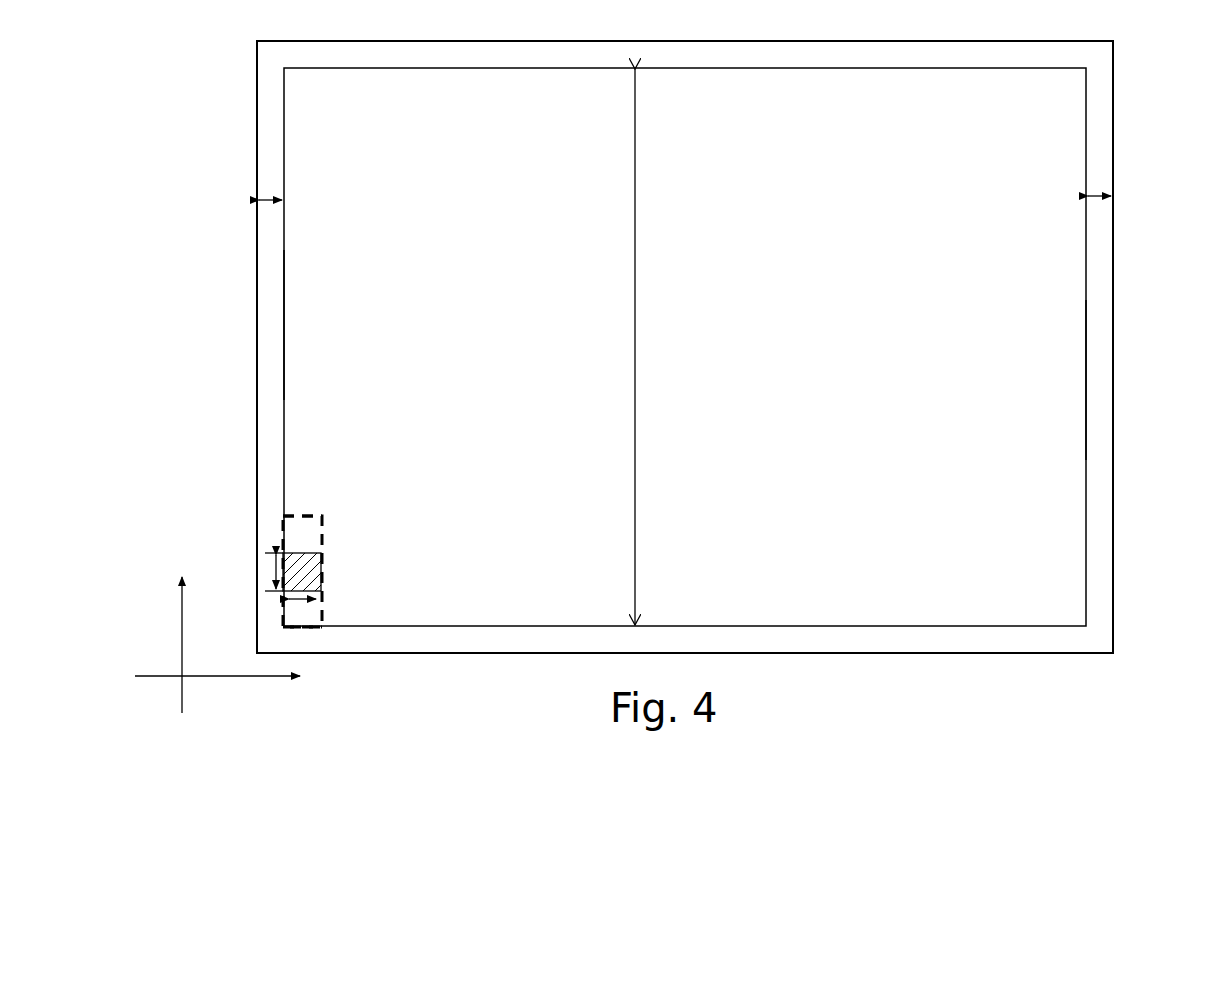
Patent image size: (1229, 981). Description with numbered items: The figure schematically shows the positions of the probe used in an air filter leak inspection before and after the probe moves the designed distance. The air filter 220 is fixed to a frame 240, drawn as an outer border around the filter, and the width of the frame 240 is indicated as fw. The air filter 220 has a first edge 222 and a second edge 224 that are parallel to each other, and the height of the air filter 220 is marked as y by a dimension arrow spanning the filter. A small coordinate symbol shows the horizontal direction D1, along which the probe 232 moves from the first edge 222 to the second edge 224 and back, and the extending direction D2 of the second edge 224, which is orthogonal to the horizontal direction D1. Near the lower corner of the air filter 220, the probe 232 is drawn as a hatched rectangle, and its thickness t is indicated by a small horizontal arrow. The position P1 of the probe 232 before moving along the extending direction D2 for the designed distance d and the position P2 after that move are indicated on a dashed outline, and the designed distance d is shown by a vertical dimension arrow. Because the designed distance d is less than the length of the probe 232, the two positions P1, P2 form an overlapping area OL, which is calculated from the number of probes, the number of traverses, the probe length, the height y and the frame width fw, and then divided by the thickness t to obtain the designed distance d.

The frame 240 is at (275, 113).
The air filter 220 is at (1066, 458).
The first edge 222 is at (1089, 382).
The second edge 224 is at (285, 328).
The width of the frame fw is at (278, 203).
The height of the air filter y is at (635, 318).
The overlapping area OL is at (306, 566).
The probe 232 is at (322, 594).
The position of the probe after moving P2 is at (313, 510).
The position of the probe before moving P1 is at (322, 612).
The designed distance d is at (270, 572).
The thickness of the probe t is at (305, 604).
The horizontal direction D1 is at (237, 678).
The extending direction of the second edge D2 is at (181, 637).